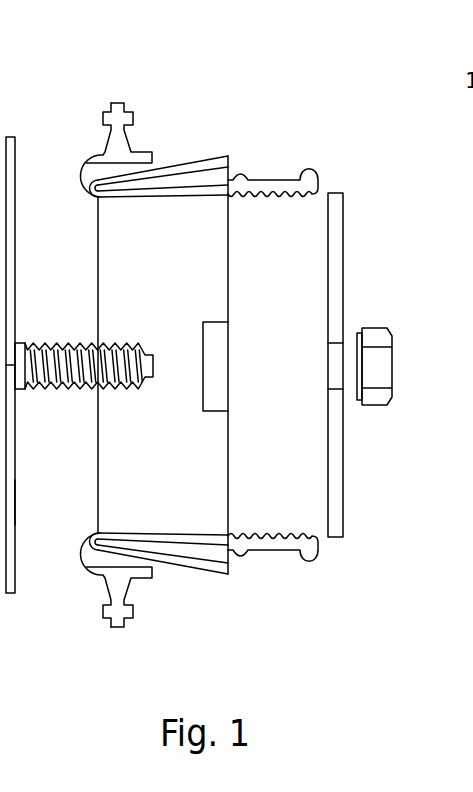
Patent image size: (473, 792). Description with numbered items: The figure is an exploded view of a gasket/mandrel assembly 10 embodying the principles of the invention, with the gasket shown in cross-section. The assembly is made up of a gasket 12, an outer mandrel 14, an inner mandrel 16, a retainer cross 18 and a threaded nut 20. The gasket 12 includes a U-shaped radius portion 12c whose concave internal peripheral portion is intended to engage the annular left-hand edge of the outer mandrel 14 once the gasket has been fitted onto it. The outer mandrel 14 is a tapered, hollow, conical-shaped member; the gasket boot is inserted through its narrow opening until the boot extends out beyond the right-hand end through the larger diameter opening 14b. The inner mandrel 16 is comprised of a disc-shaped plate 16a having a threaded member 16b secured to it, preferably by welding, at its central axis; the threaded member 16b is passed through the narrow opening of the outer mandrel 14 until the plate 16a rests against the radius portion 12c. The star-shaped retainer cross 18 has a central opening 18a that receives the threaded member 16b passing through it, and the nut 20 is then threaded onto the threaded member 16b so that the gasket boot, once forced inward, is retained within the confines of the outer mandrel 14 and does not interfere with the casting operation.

The gasket/mandrel assembly 10 is at (205, 27).
The gasket 12 is at (150, 107).
The U-shaped radius portion 12c is at (93, 562).
The outer mandrel 14 is at (234, 146).
The larger diameter opening 14b is at (228, 432).
The inner mandrel 16 is at (20, 120).
The disc-shaped plate 16a is at (15, 502).
The threaded member 16b is at (77, 313).
The retainer cross 18 is at (360, 484).
The central opening 18a is at (337, 365).
The threaded nut 20 is at (398, 420).